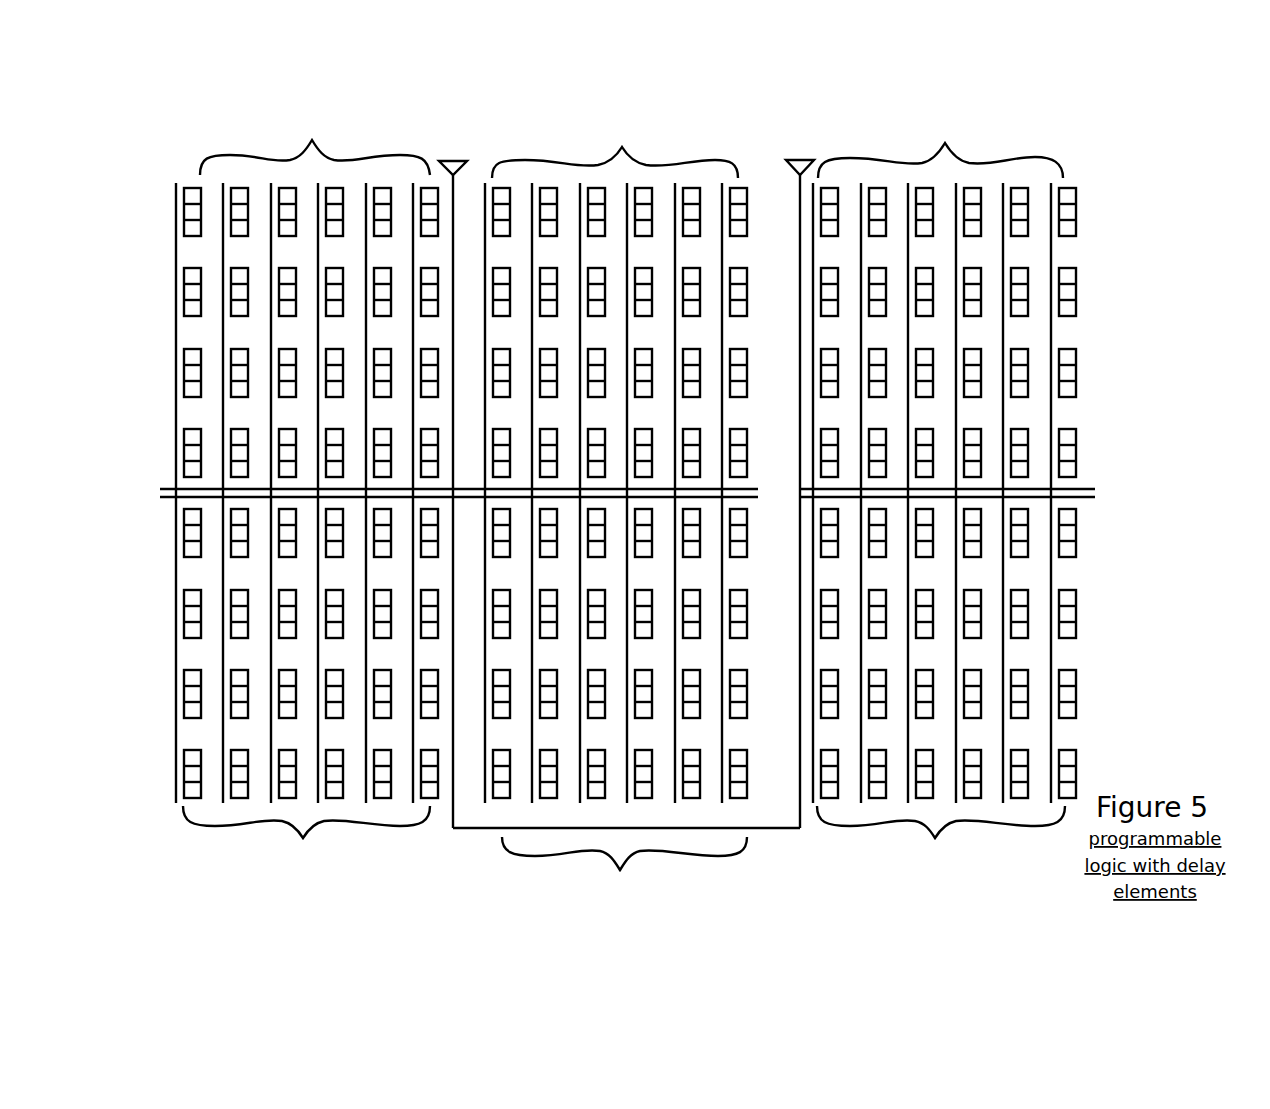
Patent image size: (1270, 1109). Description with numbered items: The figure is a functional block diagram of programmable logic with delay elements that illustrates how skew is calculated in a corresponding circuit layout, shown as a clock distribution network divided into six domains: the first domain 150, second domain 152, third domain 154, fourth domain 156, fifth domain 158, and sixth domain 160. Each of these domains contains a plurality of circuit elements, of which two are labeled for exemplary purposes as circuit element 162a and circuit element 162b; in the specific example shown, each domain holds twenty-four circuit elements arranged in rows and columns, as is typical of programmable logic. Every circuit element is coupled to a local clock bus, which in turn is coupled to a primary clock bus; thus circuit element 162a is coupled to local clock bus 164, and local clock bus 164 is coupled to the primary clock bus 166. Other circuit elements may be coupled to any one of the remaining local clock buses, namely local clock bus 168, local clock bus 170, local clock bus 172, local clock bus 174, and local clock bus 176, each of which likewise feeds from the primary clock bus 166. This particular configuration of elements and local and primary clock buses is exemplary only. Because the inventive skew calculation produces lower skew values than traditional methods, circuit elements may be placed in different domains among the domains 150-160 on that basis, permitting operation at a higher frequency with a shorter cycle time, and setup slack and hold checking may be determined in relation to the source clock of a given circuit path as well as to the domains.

The first domain 150 is at (279, 283).
The second domain 152 is at (616, 128).
The third domain 154 is at (1004, 290).
The fourth domain 156 is at (311, 855).
The fifth domain 158 is at (626, 887).
The sixth domain 160 is at (944, 855).
The circuit element 162a is at (169, 154).
The circuit element 162b is at (1127, 264).
The local clock bus 164 is at (160, 489).
The primary clock bus 166 is at (476, 165).
The local clock bus 168 is at (160, 497).
The local clock bus 170 is at (760, 487).
The local clock bus 172 is at (763, 499).
The local clock bus 174 is at (1097, 488).
The local clock bus 176 is at (1098, 499).